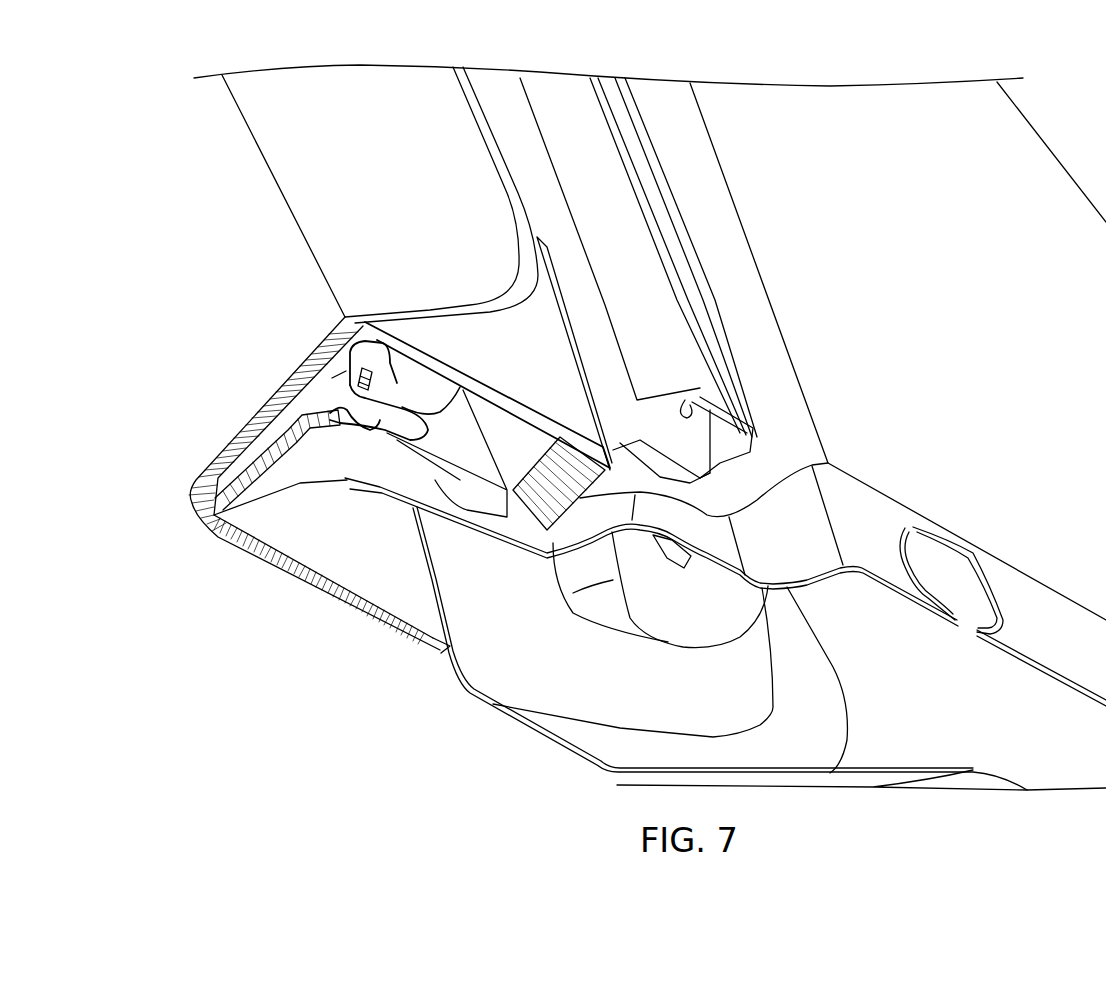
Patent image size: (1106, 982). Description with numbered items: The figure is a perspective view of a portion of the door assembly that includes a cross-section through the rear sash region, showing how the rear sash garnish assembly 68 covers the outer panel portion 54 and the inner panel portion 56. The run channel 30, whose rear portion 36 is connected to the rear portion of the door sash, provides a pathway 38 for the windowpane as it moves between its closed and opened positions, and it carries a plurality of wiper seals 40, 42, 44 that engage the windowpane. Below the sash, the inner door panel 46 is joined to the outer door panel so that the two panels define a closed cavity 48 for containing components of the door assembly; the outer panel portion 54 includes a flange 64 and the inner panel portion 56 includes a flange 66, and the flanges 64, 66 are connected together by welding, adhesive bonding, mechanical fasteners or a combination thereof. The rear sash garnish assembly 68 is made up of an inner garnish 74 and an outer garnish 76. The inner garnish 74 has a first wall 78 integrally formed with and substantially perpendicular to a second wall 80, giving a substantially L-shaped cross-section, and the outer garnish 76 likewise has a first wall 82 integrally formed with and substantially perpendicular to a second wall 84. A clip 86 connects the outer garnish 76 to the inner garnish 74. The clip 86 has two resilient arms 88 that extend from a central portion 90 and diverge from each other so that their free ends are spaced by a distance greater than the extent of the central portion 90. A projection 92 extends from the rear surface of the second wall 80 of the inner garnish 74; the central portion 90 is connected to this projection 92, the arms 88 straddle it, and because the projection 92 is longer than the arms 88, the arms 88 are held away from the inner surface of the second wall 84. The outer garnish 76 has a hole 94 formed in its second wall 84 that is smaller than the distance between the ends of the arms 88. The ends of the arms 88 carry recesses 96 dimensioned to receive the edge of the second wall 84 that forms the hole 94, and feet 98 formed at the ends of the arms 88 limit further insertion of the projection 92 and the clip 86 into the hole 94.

The run channel 30 is at (705, 238).
The rear portion 36 is at (608, 88).
The pathway 38 is at (720, 458).
The wiper seal 40 is at (441, 168).
The wiper seal 42 is at (545, 97).
The wiper seal 44 is at (680, 420).
The inner door panel 46 is at (741, 648).
The closed cavity 48 is at (640, 690).
The outer panel portion 54 is at (498, 548).
The inner panel portion 56 is at (432, 580).
The flange 64 is at (724, 592).
The flange 66 is at (387, 497).
The rear sash garnish assembly 68 is at (306, 613).
The inner garnish 74 is at (250, 124).
The outer garnish 76 is at (441, 195).
The first wall 78 is at (358, 620).
The second wall 80 is at (362, 90).
The first wall 82 is at (497, 290).
The second wall 84 is at (230, 500).
The clip 86 is at (451, 515).
The resilient arms 88 is at (462, 357).
The central portion 90 is at (440, 445).
The projection 92 is at (332, 378).
The hole 94 is at (340, 345).
The recesses 96 is at (298, 402).
The feet 98 is at (357, 330).